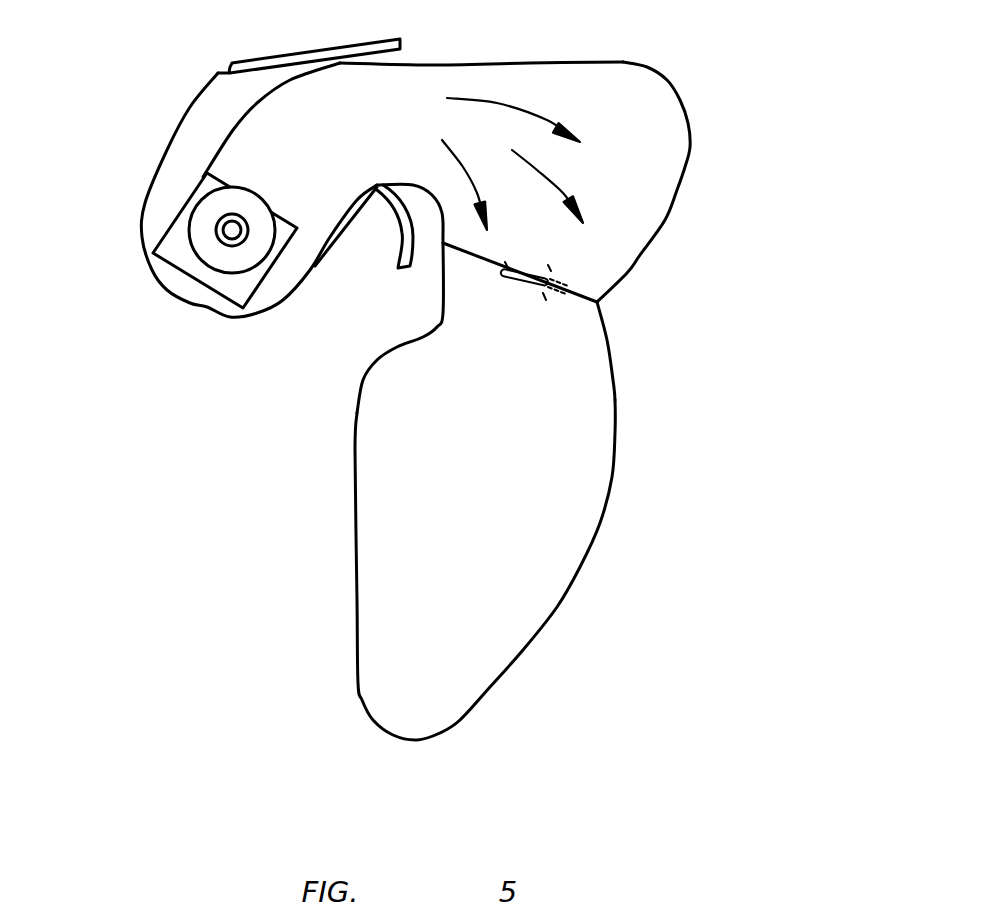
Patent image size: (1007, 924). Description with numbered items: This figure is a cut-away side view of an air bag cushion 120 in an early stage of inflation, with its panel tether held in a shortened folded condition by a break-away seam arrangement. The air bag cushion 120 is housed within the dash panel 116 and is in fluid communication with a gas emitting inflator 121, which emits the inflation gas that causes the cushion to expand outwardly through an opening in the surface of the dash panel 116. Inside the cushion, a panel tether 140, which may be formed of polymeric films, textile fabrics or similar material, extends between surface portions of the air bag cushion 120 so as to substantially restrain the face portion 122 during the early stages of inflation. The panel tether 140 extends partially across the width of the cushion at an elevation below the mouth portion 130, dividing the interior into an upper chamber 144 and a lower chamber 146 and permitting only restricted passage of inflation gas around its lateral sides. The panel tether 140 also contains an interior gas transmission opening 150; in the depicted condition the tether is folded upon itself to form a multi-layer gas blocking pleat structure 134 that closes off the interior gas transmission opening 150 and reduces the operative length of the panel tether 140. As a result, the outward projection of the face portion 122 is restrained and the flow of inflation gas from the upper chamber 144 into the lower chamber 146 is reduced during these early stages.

The dash panel 116 is at (358, 41).
The air bag cushion 120 is at (772, 96).
The inflator 121 is at (210, 270).
The face portion 122 is at (683, 167).
The mouth portion 130 is at (247, 152).
The gas blocking pleat structure 134 is at (548, 266).
The panel tether 140 is at (578, 303).
The upper chamber 144 is at (550, 73).
The lower chamber 146 is at (562, 560).
The interior gas transmission opening 150 is at (563, 287).